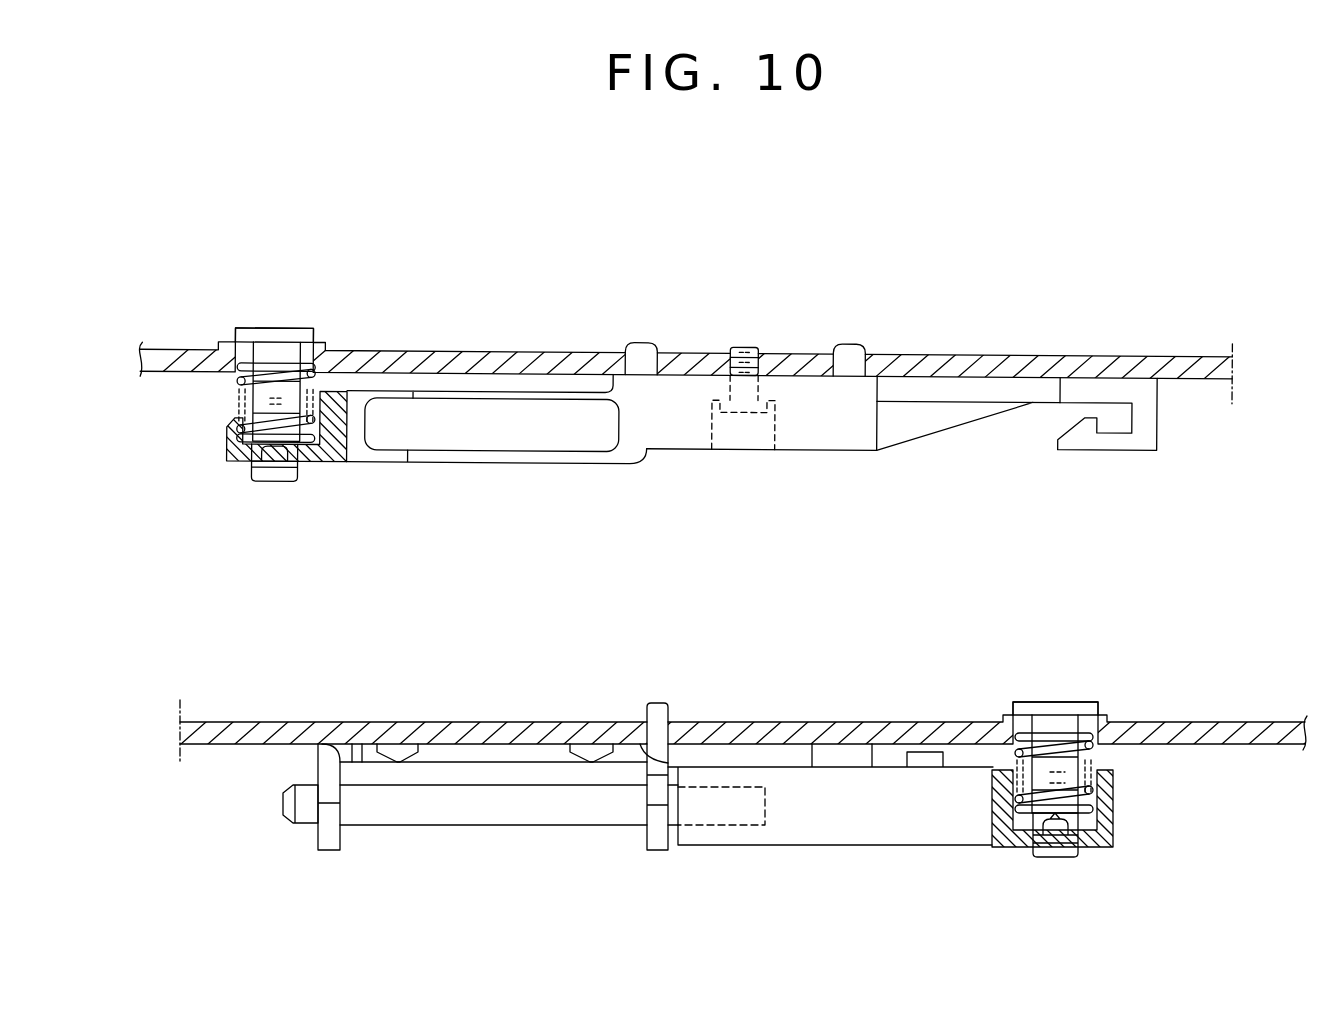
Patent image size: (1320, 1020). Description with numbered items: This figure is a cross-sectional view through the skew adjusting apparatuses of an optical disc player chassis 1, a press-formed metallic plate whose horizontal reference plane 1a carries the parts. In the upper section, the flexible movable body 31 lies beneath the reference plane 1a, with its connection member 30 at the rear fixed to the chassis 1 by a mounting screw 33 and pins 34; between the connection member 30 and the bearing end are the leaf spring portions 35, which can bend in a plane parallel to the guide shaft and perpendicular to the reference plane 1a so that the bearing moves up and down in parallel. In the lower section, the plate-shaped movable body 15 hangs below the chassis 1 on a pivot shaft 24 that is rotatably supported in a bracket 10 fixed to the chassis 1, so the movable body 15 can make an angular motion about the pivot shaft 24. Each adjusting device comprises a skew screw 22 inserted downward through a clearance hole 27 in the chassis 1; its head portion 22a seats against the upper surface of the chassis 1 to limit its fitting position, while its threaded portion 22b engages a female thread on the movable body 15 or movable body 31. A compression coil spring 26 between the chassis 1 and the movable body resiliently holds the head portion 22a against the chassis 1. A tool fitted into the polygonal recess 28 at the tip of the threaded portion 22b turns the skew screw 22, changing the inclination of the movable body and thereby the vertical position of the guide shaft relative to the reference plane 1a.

The chassis 1 is at (1272, 722).
The horizontal reference plane 1a is at (1005, 353).
The bracket 10 is at (326, 851).
The movable body 15 is at (851, 845).
The skew screw 22 is at (307, 330).
The head portion 22a is at (238, 326).
The threaded portion 22b is at (230, 463).
The pivot shaft 24 is at (521, 826).
The compression coil spring 26 is at (240, 381).
The clearance hole 27 is at (258, 343).
The polygonal recess 28 is at (277, 466).
The connection member 30 is at (803, 392).
The movable body 31 is at (367, 466).
The mounting screw 33 is at (742, 347).
The pins 34 is at (638, 343).
The leaf spring portions 35 is at (503, 400).